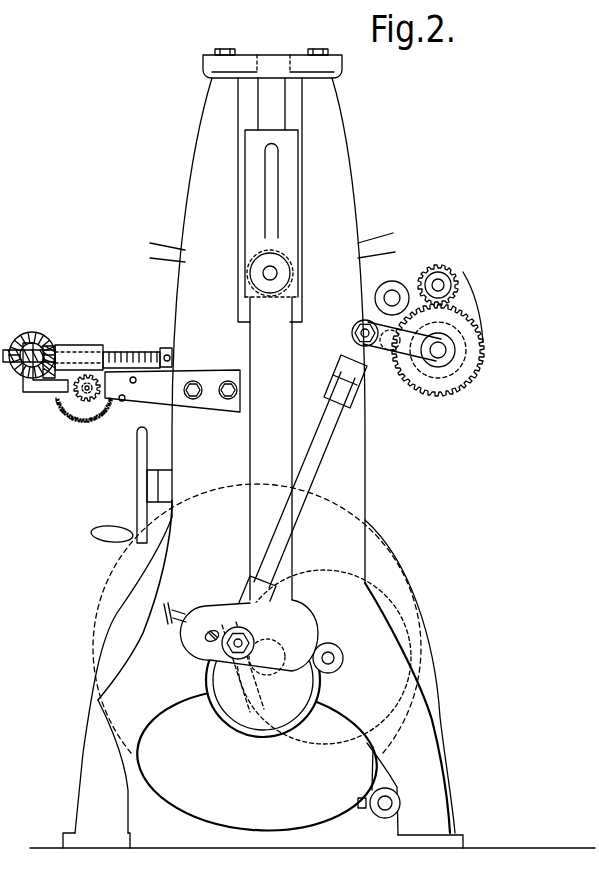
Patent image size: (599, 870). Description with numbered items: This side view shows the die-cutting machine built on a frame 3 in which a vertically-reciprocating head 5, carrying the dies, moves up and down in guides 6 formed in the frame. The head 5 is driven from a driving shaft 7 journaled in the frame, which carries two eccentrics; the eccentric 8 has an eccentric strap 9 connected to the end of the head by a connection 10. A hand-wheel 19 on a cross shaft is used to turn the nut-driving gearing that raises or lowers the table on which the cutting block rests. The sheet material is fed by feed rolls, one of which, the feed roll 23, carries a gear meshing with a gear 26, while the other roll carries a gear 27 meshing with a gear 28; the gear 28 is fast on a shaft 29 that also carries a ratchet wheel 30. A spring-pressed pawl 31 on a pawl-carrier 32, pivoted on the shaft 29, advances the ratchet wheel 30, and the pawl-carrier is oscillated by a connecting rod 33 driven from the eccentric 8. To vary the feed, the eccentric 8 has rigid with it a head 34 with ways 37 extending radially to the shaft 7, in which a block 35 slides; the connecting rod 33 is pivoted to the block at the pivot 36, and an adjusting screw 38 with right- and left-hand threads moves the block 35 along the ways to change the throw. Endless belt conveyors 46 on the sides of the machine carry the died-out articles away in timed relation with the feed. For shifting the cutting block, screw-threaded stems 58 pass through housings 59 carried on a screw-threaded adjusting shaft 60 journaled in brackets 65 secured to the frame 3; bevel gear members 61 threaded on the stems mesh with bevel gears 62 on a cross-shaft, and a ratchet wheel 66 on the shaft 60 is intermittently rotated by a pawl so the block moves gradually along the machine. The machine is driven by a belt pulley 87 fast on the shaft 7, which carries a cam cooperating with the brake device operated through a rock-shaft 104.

The frame 3 is at (190, 430).
The vertically-reciprocating head 5 is at (248, 160).
The guides 6 is at (238, 102).
The driving shaft 7 is at (300, 633).
The eccentric 8 is at (247, 710).
The eccentric strap 9 is at (263, 731).
The connection 10 is at (260, 330).
The hand-wheel 19 is at (137, 478).
The feed roll 23 is at (387, 280).
The gear 26 is at (463, 268).
The gear 27 is at (410, 390).
The gear 28 is at (472, 338).
The shaft 29 is at (440, 352).
The ratchet wheel 30 is at (483, 368).
The spring-pressed pawl 31 is at (381, 285).
The pawl-carrier 32 is at (418, 360).
The connecting rod 33 is at (318, 457).
The head 34 is at (198, 653).
The block 35 is at (237, 630).
The pivot 36 is at (232, 677).
The ways 37 is at (205, 637).
The adjusting screw 38 is at (166, 613).
The endless belt conveyor 46 is at (162, 243).
The screw-threaded stem 58 is at (135, 353).
The housing 59 is at (88, 345).
The screw-threaded adjusting shaft 60 is at (80, 396).
The bevel gear member 61 is at (49, 345).
The bevel gear 62 is at (32, 338).
The bracket 65 is at (140, 403).
The ratchet wheel 66 is at (85, 417).
The belt pulley 87 is at (409, 572).
The rock-shaft 104 is at (386, 804).